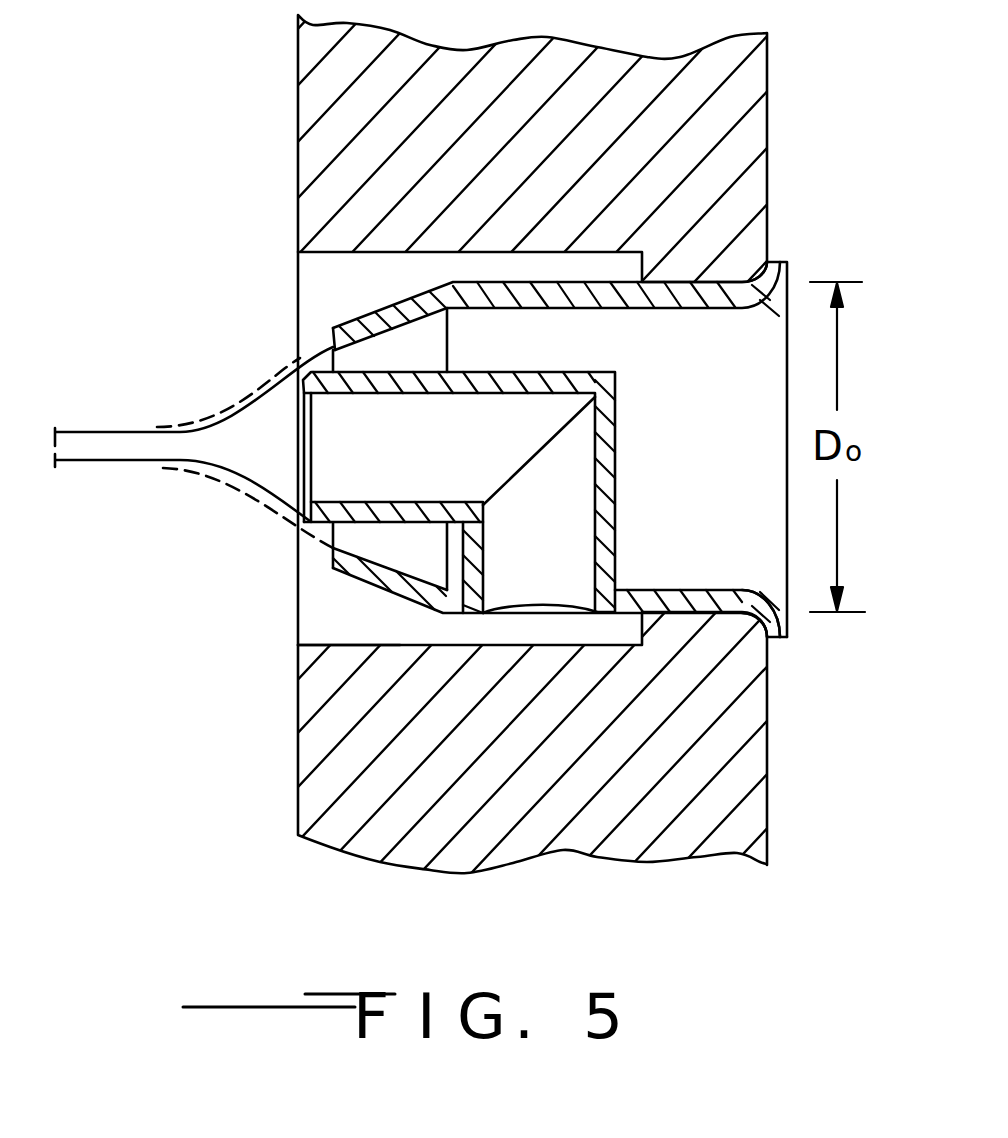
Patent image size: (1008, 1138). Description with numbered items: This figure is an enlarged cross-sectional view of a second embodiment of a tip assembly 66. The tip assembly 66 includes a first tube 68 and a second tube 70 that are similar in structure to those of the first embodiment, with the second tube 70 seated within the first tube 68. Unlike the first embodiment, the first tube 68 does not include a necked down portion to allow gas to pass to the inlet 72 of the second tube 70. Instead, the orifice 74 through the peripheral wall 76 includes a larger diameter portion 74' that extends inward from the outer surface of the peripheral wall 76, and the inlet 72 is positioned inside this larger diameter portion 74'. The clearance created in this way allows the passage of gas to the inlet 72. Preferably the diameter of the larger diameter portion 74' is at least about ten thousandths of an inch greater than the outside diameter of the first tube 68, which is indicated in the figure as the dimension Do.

The tip assembly 66 is at (215, 270).
The first tube 68 is at (388, 318).
The second tube 70 is at (462, 385).
The inlet 72 is at (527, 603).
The orifice 74 is at (796, 660).
The larger diameter portion 74' is at (254, 608).
The peripheral wall 76 is at (347, 762).